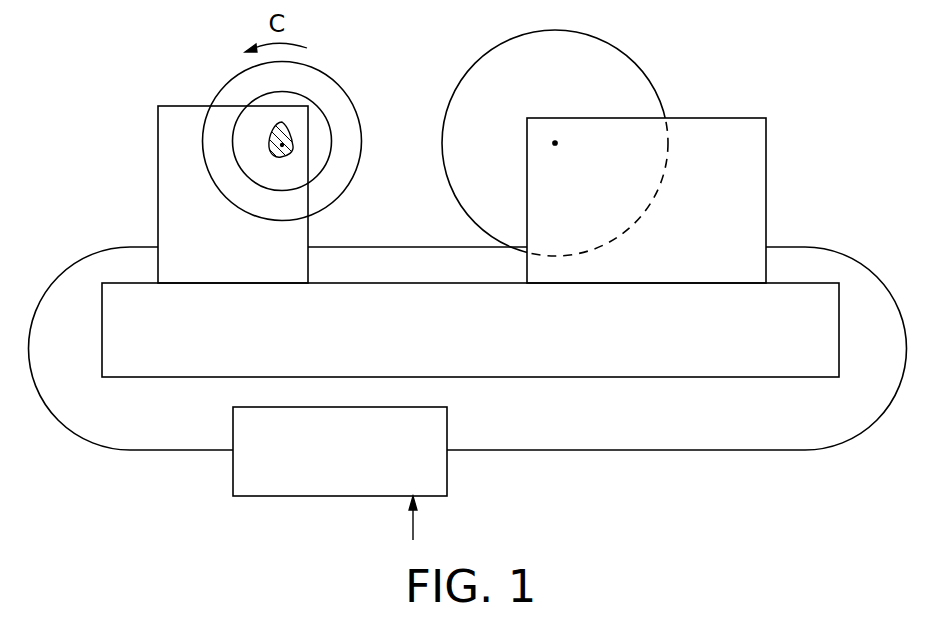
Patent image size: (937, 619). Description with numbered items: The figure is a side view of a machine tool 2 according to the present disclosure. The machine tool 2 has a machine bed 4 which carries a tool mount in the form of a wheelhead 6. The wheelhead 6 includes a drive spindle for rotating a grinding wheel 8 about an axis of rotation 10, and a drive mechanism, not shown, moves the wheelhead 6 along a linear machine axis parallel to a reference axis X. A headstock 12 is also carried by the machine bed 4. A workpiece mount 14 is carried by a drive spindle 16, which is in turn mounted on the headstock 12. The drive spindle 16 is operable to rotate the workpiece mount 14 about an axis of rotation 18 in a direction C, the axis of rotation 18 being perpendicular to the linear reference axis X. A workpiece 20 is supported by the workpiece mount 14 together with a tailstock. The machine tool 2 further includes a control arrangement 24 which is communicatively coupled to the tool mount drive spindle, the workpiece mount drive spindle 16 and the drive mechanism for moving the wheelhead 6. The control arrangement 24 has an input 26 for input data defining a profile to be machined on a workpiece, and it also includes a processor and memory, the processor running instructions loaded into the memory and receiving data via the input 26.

The machine tool 2 is at (748, 80).
The machine bed 4 is at (690, 357).
The wheelhead 6 is at (752, 170).
The grinding wheel 8 is at (623, 72).
The axis of rotation 10 is at (556, 143).
The headstock 12 is at (170, 162).
The workpiece mount 14 is at (317, 143).
The drive spindle 16 is at (342, 110).
The axis of rotation 18 is at (291, 148).
The workpiece 20 is at (282, 122).
The control arrangement 24 is at (340, 451).
The input 26 is at (412, 523).